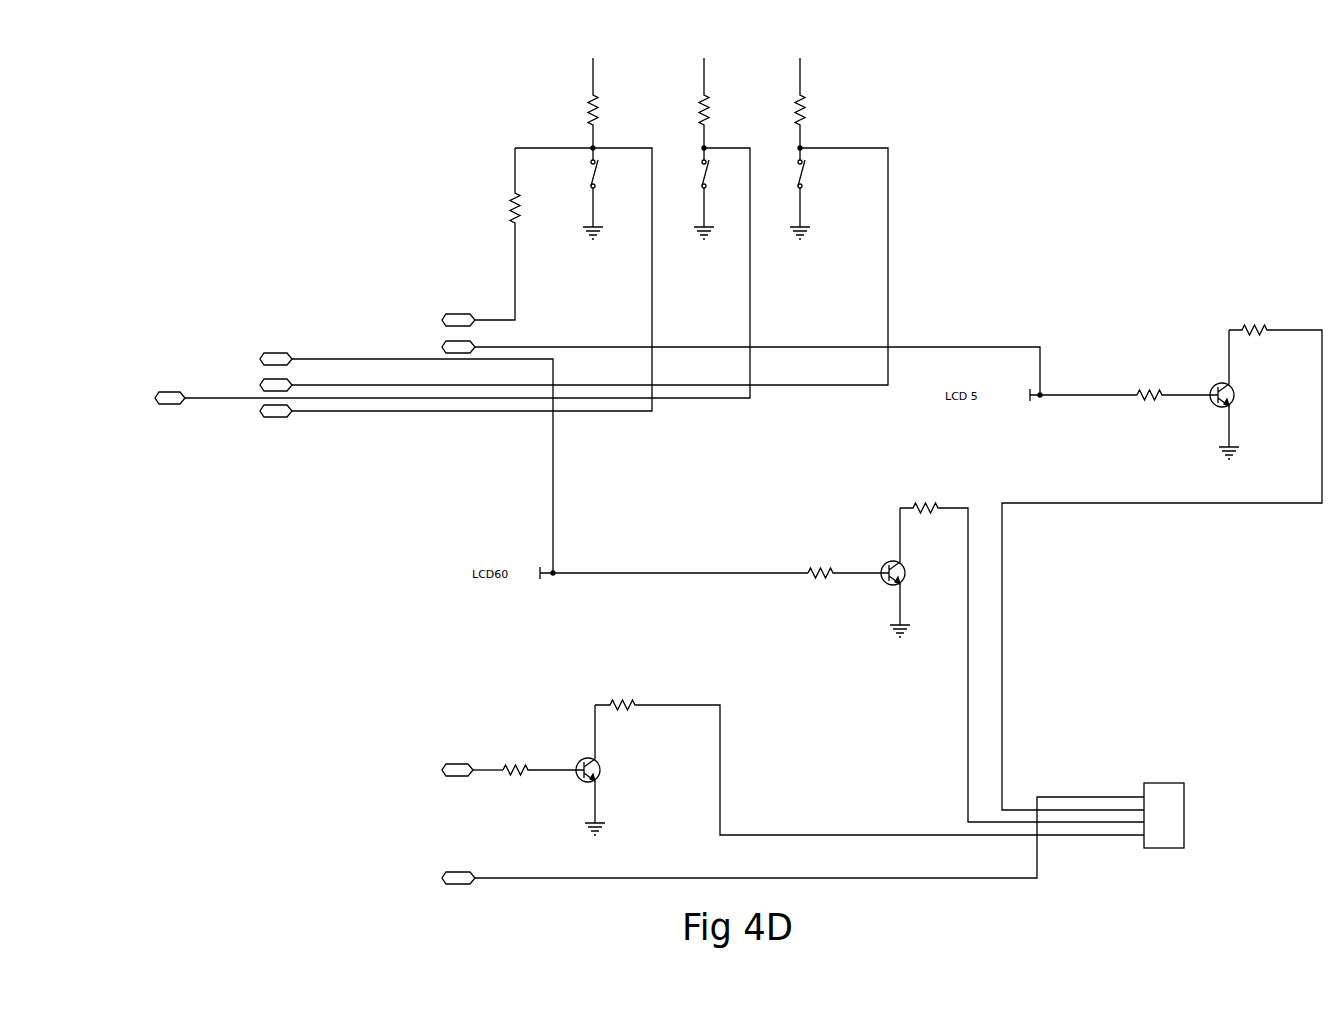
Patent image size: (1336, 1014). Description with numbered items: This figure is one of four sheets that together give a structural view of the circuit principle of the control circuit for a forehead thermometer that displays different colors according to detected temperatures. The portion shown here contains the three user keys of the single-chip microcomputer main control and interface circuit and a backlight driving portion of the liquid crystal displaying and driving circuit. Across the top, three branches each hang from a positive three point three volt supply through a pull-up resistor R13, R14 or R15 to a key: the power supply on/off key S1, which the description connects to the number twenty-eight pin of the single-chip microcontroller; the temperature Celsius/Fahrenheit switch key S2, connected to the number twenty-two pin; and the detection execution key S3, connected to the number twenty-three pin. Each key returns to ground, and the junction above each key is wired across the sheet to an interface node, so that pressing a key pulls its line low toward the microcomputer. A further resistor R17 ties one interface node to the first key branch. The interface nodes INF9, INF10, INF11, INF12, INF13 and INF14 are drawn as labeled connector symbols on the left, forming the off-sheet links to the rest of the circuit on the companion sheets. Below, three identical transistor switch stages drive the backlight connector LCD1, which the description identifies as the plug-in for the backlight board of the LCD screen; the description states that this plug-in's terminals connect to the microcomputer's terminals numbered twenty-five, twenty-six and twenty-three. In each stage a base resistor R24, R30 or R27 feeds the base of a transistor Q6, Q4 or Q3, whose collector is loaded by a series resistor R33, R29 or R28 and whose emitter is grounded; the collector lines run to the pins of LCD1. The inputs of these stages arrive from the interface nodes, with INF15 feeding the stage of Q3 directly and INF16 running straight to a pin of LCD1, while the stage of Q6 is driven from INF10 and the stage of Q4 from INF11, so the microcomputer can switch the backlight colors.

The pull-up resistor 10K R13 is at (599, 96).
The pull-up resistor 10K R14 is at (710, 96).
The pull-up resistor 10K R15 is at (806, 96).
The resistor 0R R17 is at (510, 234).
The power supply on/off key S1 is at (605, 192).
The temperature Celsius/Fahrenheit switch key S2 is at (707, 192).
The detection execution key S3 is at (806, 192).
The base resistor 1K R24 is at (1177, 395).
The resistor 120R R33 is at (1162, 560).
The transistor S8050 Q6 is at (1240, 394).
The base resistor 1K R30 is at (848, 573).
The resistor 33R R29 is at (1022, 655).
The transistor S8050 Q4 is at (911, 572).
The base resistor 1K R27 is at (543, 770).
The resistor 15R R28 is at (869, 760).
The transistor S8050 Q3 is at (606, 770).
The LCD connector LCD1 is at (1164, 810).
The interface pin INF9 is at (431, 320).
The interface pin INF10 is at (707, 365).
The interface pin INF11 is at (373, 460).
The interface pin INF12 is at (243, 385).
The interface pin INF13 is at (137, 398).
The interface pin INF14 is at (243, 411).
The interface pin INF15 is at (438, 770).
The interface pin INF16 is at (759, 843).